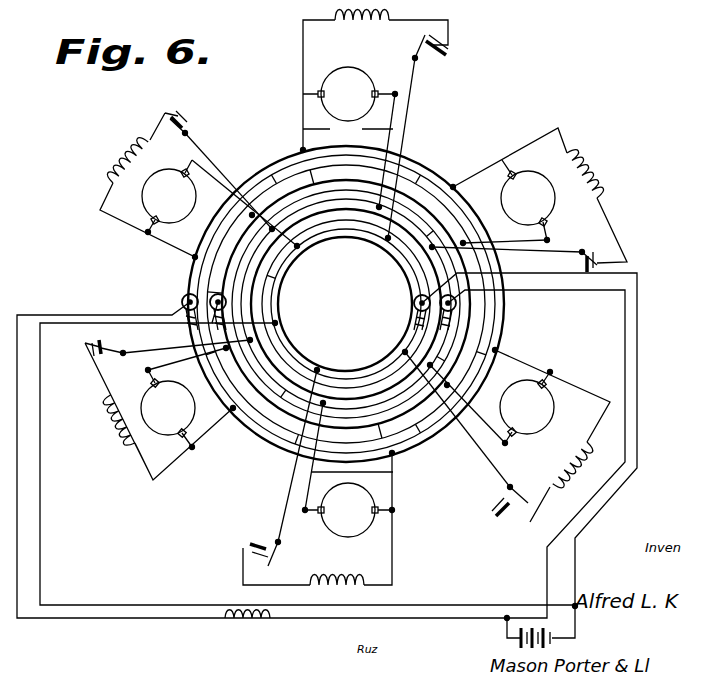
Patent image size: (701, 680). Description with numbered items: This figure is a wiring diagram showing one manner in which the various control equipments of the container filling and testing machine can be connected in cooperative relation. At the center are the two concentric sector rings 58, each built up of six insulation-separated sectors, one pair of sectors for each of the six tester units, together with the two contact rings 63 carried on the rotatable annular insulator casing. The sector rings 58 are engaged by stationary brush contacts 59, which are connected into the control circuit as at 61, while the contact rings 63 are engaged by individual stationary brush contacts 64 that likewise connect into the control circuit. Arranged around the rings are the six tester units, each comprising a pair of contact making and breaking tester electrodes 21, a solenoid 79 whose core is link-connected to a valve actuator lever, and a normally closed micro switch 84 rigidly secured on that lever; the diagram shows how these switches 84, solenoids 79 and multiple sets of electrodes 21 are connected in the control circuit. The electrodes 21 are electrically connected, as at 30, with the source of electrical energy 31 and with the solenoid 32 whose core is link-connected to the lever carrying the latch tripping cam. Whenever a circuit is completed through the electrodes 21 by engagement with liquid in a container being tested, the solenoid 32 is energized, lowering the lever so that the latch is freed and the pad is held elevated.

The tester electrodes 21 is at (348, 302).
The electrical connection 30 is at (498, 172).
The source of electrical energy 31 is at (516, 648).
The solenoid 32 is at (250, 627).
The concentric sector rings 58 is at (418, 185).
The brush contacts 59 is at (185, 296).
The control circuit connection 61 is at (48, 318).
The contact rings 63 is at (352, 236).
The brush contacts 64 is at (414, 308).
The solenoid 79 is at (340, 578).
The micro switch 84 is at (268, 548).